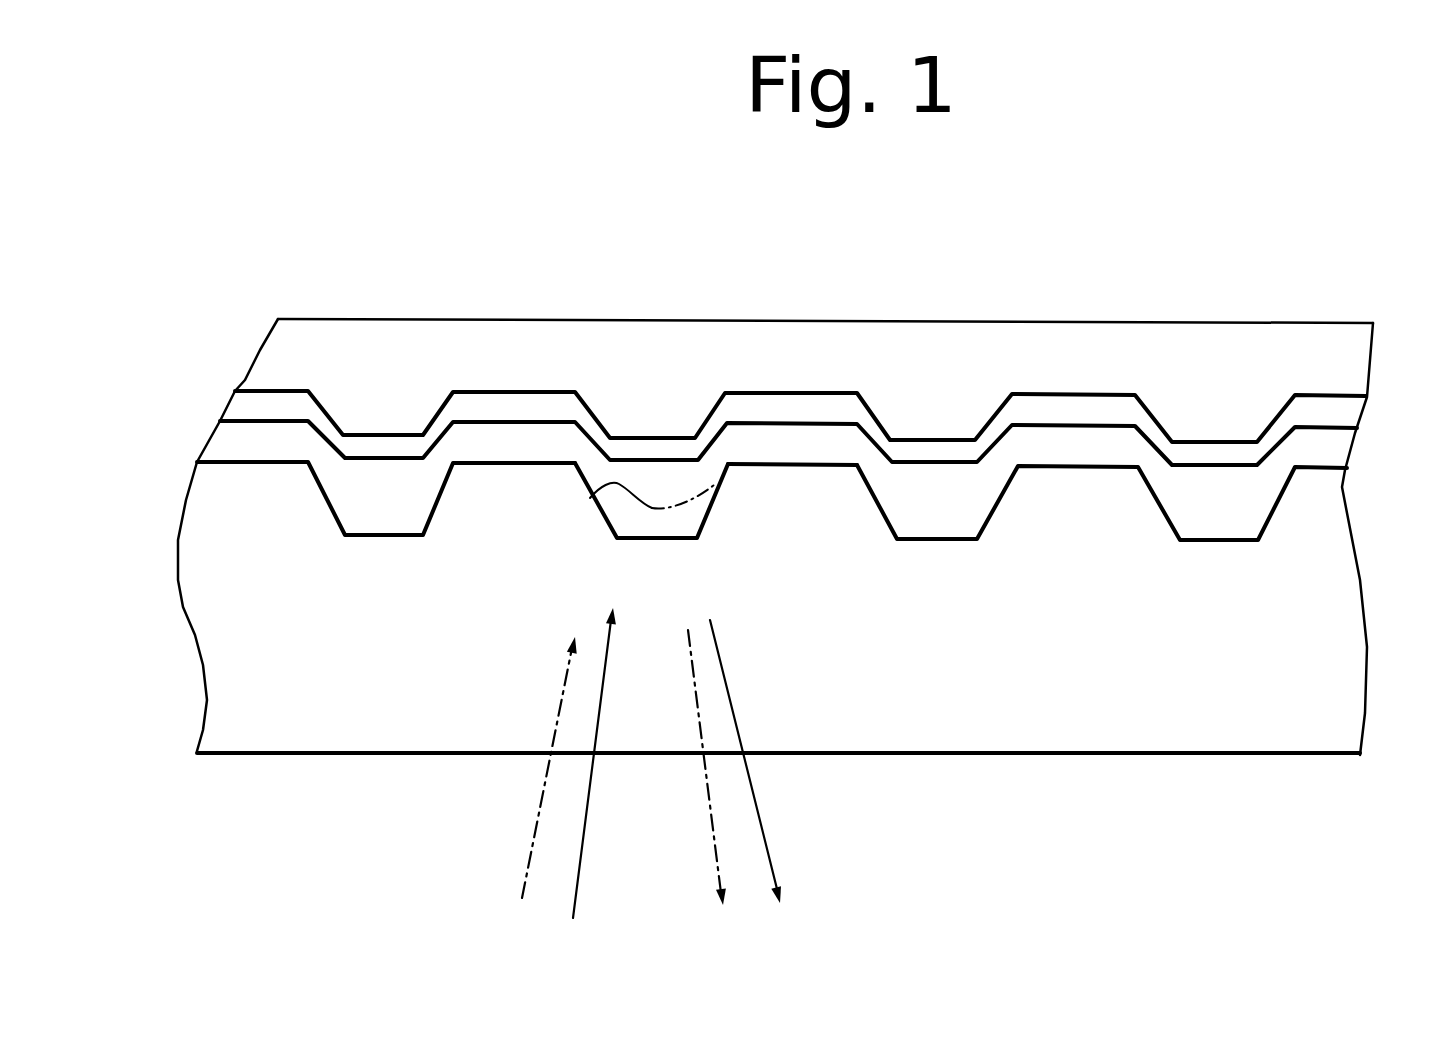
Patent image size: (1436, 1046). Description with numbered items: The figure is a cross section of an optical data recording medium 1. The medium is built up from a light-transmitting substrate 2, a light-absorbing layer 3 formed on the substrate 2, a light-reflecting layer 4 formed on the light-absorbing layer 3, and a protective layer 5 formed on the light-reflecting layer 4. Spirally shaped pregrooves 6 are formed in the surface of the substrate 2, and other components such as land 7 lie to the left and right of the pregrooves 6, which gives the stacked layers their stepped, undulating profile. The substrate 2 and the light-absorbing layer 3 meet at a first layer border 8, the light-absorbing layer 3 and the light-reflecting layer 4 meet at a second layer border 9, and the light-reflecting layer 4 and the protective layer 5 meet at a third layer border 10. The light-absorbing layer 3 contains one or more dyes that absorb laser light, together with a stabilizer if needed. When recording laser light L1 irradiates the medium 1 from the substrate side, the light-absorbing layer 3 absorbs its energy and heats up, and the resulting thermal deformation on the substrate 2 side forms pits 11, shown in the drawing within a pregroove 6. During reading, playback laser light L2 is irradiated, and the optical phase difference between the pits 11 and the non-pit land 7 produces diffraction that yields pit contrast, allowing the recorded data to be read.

The optical data recording medium 1 is at (1040, 270).
The light-transmitting substrate 2 is at (236, 672).
The light-absorbing layer 3 is at (224, 443).
The light-reflecting layer 4 is at (252, 408).
The protective layer 5 is at (284, 346).
The pregrooves 6 is at (692, 527).
The land 7 is at (806, 464).
The first layer border 8 is at (1356, 471).
The second layer border 9 is at (1367, 433).
The third layer border 10 is at (1379, 397).
The pits 11 is at (593, 496).
The recording laser light L1 is at (593, 785).
The playback laser light L2 is at (545, 783).